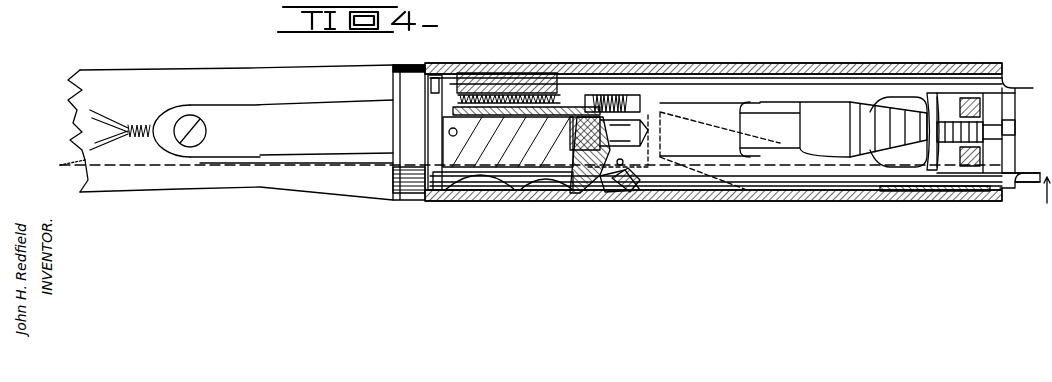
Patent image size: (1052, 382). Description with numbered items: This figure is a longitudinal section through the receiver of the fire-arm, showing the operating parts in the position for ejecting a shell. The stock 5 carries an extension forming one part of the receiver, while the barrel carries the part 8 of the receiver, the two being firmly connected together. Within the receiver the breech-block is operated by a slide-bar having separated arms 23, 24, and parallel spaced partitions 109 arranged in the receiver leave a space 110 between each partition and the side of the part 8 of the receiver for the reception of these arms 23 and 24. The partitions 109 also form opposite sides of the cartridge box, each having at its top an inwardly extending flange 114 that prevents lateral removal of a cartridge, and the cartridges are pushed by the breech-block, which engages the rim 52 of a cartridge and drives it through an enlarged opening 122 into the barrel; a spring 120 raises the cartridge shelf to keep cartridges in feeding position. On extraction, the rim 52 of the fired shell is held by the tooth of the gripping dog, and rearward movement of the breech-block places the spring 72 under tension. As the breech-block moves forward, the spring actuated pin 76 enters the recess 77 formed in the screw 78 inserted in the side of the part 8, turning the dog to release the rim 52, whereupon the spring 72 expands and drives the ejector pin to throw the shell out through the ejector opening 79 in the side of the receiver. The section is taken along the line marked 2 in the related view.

The section line 2 is at (548, 175).
The stock 5 is at (230, 132).
The part of the receiver 8 is at (762, 68).
The arm of the slide-bar 23 is at (1010, 85).
The arm of the slide-bar 24 is at (1030, 182).
The rim of the cartridge 52 is at (650, 131).
The spring 72 is at (490, 93).
The spring actuated pin 76 is at (592, 197).
The recess 77 is at (607, 197).
The screw 78 is at (616, 197).
The ejector opening 79 is at (900, 196).
The partition 109 is at (930, 92).
The space 110 is at (785, 82).
The inwardly extending flange 114 is at (703, 102).
The spring 120 is at (980, 110).
The enlarged opening 122 is at (882, 96).